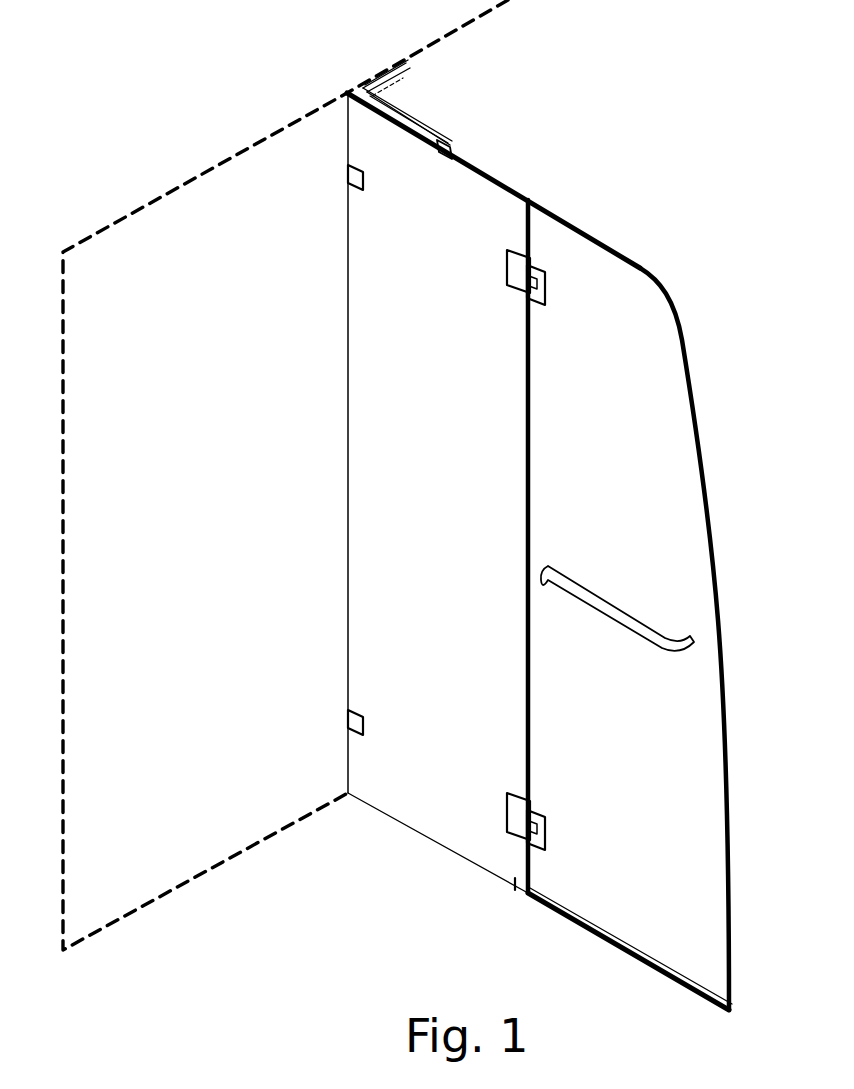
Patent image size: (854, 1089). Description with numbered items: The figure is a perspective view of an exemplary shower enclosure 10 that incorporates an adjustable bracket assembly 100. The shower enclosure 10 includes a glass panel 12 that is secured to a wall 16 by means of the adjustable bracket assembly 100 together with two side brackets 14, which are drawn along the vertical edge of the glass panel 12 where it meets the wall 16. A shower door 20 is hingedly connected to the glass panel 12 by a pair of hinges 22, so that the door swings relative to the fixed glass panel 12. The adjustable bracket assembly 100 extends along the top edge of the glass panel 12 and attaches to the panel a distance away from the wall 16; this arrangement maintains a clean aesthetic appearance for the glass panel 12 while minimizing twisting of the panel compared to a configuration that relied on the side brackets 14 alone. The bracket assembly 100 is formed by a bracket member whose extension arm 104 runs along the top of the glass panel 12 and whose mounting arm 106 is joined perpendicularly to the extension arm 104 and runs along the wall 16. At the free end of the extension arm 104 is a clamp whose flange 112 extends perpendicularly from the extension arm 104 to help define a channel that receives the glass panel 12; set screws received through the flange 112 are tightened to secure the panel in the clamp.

The shower enclosure 10 is at (579, 206).
The glass panel 12 is at (490, 186).
The side brackets 14 is at (354, 190).
The wall 16 is at (198, 205).
The shower door 20 is at (665, 296).
The hinges 22 is at (546, 277).
The adjustable bracket assembly 100 is at (416, 110).
The extension arm 104 is at (430, 139).
The mounting arm 106 is at (404, 73).
The flange 112 is at (466, 157).